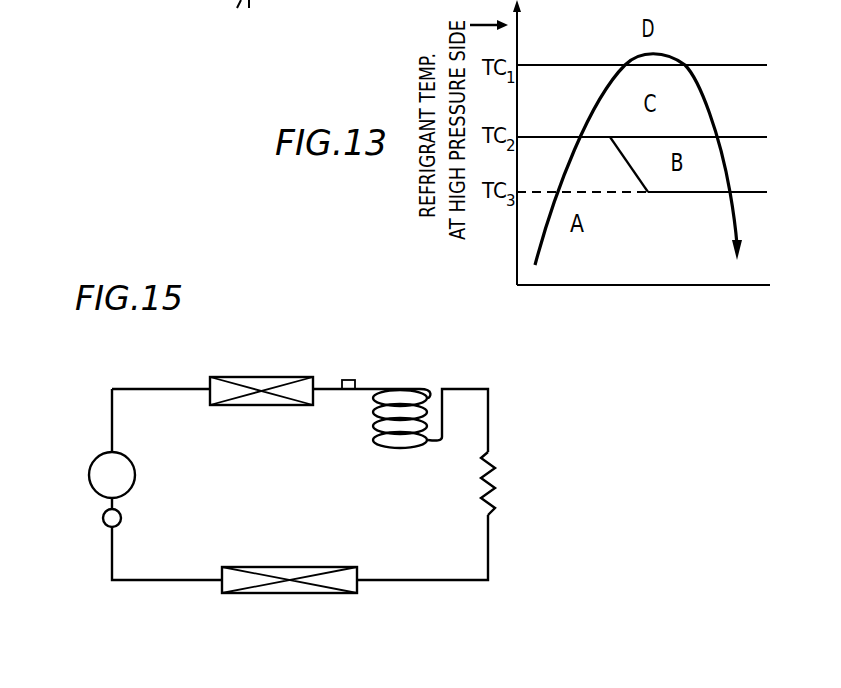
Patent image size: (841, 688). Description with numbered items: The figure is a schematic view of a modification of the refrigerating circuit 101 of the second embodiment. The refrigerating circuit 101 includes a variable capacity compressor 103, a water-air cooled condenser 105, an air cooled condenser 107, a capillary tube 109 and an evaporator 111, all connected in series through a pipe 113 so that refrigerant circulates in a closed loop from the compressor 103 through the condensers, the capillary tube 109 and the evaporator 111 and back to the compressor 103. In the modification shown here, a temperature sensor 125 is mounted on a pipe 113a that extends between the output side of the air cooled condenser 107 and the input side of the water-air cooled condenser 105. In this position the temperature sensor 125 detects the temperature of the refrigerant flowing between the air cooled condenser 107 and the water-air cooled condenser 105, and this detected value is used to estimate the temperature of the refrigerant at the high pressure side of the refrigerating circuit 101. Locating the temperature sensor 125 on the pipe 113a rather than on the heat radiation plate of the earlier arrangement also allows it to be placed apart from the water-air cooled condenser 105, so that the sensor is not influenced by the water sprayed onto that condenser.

The refrigerating circuit 101 is at (103, 398).
The variable capacity compressor 103 is at (88, 480).
The water-air cooled condenser 105 is at (403, 387).
The air cooled condenser 107 is at (253, 377).
The capillary tube 109 is at (499, 485).
The evaporator 111 is at (255, 567).
The pipe 113 is at (181, 387).
The pipe 113a is at (342, 398).
The temperature sensor 125 is at (348, 380).